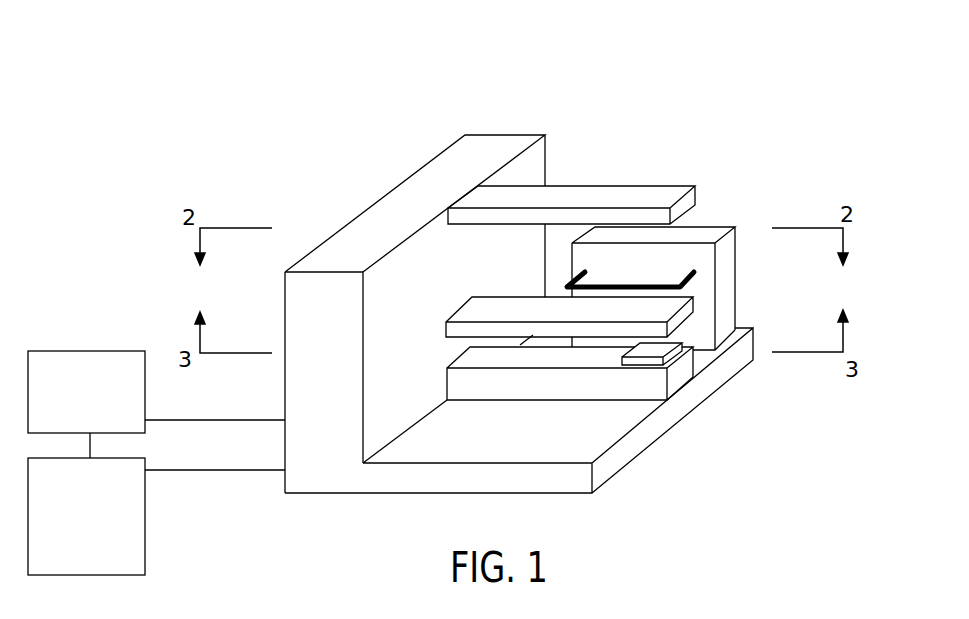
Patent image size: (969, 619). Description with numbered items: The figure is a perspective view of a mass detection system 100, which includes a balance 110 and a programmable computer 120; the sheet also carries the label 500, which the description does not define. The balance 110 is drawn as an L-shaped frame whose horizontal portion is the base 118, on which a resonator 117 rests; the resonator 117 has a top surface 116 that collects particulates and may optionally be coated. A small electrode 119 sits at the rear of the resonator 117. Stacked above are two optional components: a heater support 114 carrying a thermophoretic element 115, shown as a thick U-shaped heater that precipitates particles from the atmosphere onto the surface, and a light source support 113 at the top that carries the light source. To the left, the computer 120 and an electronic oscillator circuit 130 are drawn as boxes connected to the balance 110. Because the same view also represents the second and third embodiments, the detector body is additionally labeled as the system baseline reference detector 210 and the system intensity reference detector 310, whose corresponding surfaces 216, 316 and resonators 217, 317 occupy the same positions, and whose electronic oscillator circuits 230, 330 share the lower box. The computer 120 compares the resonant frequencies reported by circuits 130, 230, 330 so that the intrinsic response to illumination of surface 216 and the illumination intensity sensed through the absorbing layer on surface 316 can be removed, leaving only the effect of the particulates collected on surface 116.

The mass detection system 100 is at (108, 144).
The apparatus 500 is at (333, 41).
The balance 110 is at (567, 267).
The system baseline reference detector 210 is at (567, 267).
The system intensity reference detector 310 is at (297, 187).
The light source support 113 is at (660, 186).
The heater support 114 is at (680, 238).
The thermophoretic element 115 is at (660, 283).
The surface 116 is at (684, 302).
The surface 216 is at (684, 302).
The surface 316 is at (658, 314).
The resonator 117 is at (684, 345).
The resonator 217 is at (684, 345).
The resonator 317 is at (683, 312).
The base 118 is at (680, 377).
The electrode 119 is at (657, 350).
The programmable computer 120 is at (108, 407).
The electronic oscillator circuit 130 is at (86, 516).
The electronic oscillator circuit 230 is at (86, 516).
The electronic oscillator circuit 330 is at (108, 501).